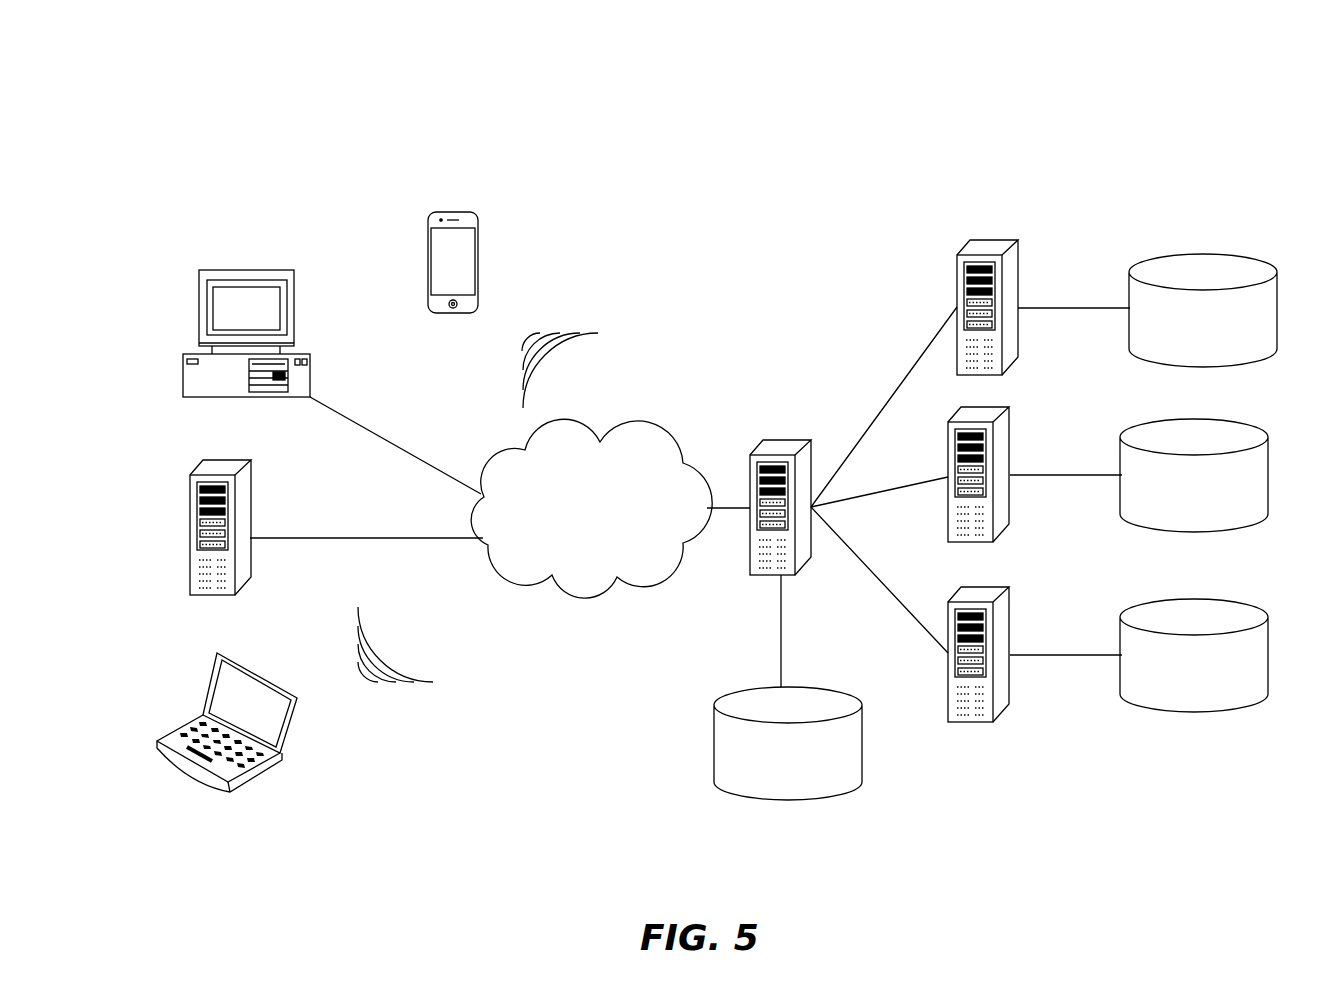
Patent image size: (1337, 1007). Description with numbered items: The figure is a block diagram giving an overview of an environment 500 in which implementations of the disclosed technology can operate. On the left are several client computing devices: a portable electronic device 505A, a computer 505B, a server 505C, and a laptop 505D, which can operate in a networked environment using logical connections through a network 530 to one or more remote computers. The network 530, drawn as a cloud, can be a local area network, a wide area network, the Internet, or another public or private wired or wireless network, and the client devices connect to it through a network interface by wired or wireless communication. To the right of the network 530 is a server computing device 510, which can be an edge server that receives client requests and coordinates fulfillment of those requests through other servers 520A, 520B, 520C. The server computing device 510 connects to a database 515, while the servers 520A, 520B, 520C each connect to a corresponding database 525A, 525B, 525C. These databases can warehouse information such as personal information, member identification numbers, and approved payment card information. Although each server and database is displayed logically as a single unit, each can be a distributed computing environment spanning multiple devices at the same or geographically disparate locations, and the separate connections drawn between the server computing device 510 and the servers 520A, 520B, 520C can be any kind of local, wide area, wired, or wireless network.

The environment 500 is at (1078, 122).
The portable electronic device 505A is at (468, 213).
The computer 505B is at (287, 270).
The server 505C is at (246, 462).
The laptop 505D is at (294, 727).
The server computing device 510 is at (790, 441).
The database 515 is at (846, 689).
The server computing device 520A is at (1018, 241).
The server computing device 520B is at (1010, 408).
The server computing device 520C is at (1010, 588).
The database 525A is at (1200, 254).
The database 525B is at (1192, 420).
The database 525C is at (1192, 600).
The network 530 is at (640, 432).